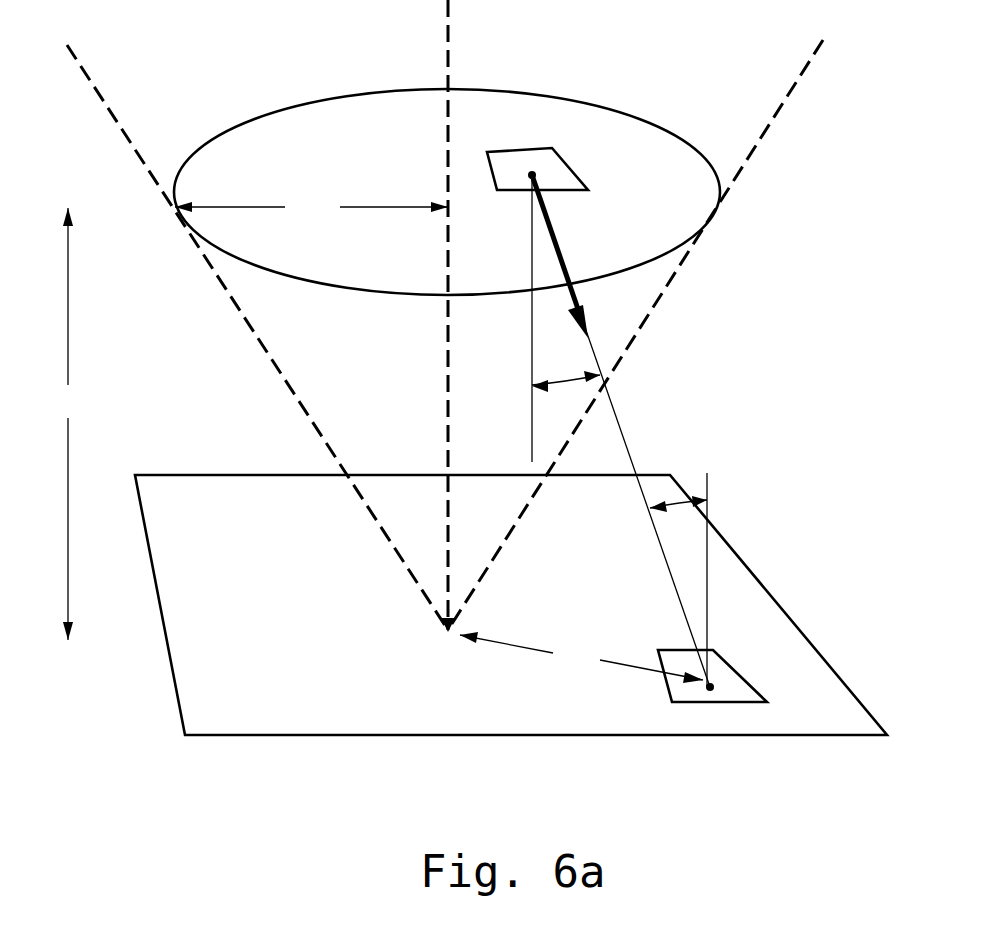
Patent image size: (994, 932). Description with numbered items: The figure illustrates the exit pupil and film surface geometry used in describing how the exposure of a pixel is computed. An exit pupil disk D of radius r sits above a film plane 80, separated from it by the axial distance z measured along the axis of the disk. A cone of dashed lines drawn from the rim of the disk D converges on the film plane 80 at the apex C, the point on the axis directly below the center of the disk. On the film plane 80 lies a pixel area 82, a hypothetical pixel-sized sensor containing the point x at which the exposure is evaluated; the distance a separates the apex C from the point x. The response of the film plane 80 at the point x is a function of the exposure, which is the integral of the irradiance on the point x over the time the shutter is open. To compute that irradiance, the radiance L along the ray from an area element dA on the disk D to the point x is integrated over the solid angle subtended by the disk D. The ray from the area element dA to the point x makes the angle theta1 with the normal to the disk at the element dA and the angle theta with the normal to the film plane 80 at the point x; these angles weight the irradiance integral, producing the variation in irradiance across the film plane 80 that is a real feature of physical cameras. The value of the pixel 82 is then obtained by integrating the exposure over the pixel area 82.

The film plane 80 is at (235, 475).
The pixel area 82 is at (670, 693).
The exit pupil disk D is at (520, 95).
The area element dA" dA is at (570, 165).
The point x' x is at (717, 680).
The radiance L(x",x') L is at (567, 260).
The cone apex C' C is at (445, 633).
The distance a is at (581, 657).
The radius r is at (311, 206).
The axial distance Z z is at (66, 424).
The angle θ theta is at (678, 515).
The angle θ" theta1 is at (566, 371).